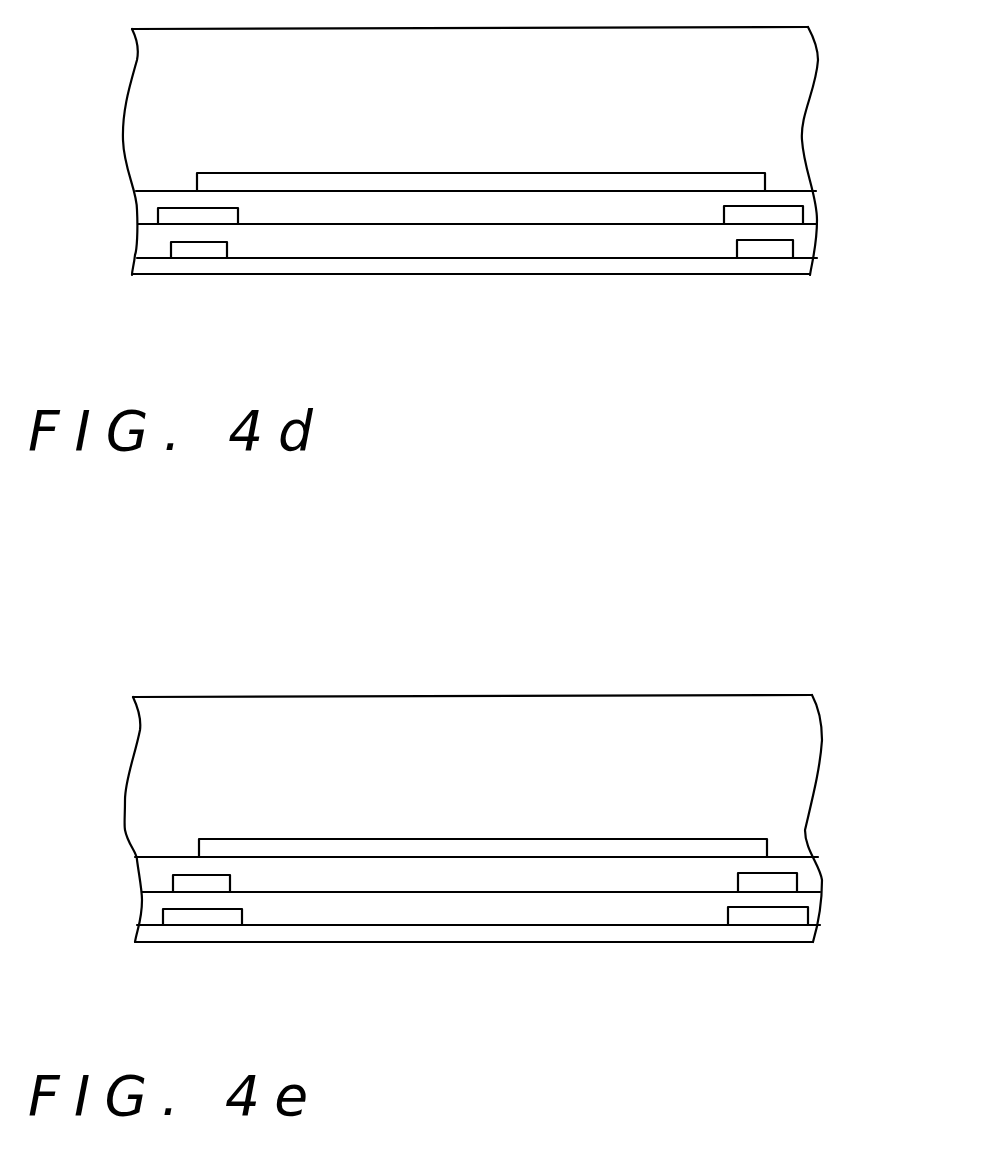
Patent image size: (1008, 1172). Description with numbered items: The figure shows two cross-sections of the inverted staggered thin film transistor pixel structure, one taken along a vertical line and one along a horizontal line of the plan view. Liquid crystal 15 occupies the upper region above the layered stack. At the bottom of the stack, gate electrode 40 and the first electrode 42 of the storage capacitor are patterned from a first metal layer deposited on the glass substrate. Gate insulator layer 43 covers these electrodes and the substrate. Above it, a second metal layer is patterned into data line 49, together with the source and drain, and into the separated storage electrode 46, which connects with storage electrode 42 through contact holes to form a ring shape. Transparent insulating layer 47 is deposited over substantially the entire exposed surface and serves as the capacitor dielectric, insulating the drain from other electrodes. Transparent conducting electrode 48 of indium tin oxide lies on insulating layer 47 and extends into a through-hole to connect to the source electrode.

In FIG. 4d, the liquid crystal (LC) 15 is at (153, 88).
In FIG. 4e, the liquid crystal (LC) 15 is at (153, 757).
In FIG. 4d, the gate electrode 40 is at (196, 253).
In FIG. 4e, the first electrode of the storage capacitor 42 is at (200, 920).
In FIG. 4d, the gate insulator layer 43 is at (530, 245).
In FIG. 4e, the gate insulator layer 43 is at (533, 912).
In FIG. 4d, the separated first electrode of the storage capacitor 46 is at (168, 215).
In FIG. 4d, the transparent insulating layer 47 is at (314, 207).
In FIG. 4e, the transparent insulating layer 47 is at (317, 873).
In FIG. 4d, the transparent conducting electrode 48 is at (633, 182).
In FIG. 4e, the transparent conducting electrode 48 is at (637, 850).
In FIG. 4e, the data line 49 is at (175, 883).